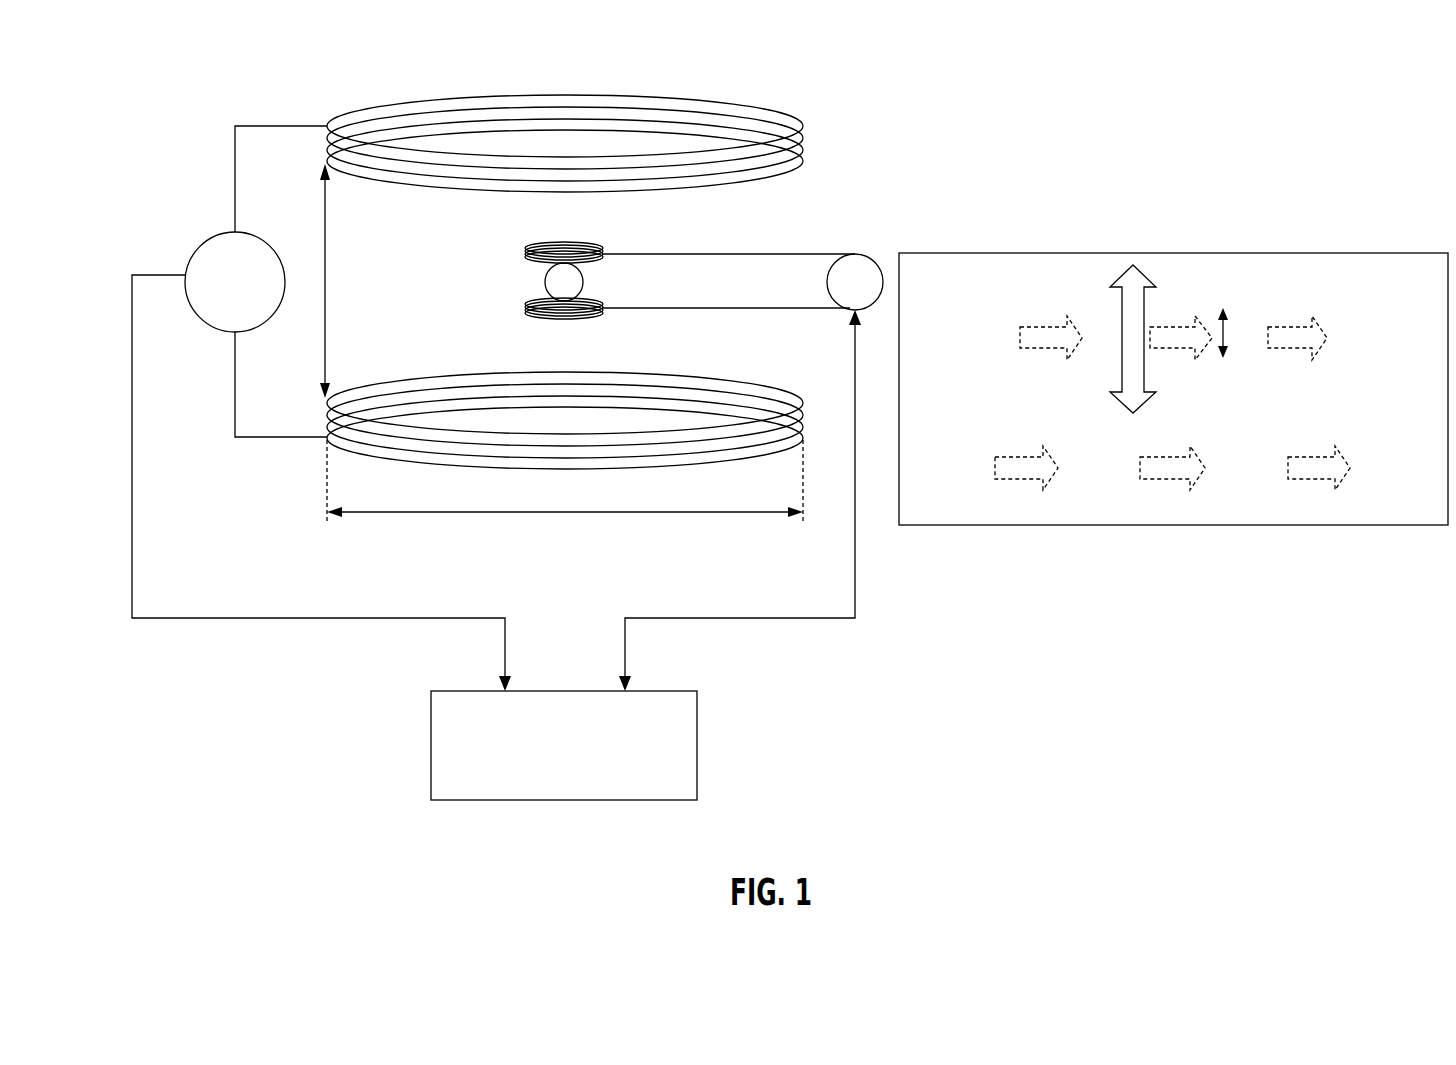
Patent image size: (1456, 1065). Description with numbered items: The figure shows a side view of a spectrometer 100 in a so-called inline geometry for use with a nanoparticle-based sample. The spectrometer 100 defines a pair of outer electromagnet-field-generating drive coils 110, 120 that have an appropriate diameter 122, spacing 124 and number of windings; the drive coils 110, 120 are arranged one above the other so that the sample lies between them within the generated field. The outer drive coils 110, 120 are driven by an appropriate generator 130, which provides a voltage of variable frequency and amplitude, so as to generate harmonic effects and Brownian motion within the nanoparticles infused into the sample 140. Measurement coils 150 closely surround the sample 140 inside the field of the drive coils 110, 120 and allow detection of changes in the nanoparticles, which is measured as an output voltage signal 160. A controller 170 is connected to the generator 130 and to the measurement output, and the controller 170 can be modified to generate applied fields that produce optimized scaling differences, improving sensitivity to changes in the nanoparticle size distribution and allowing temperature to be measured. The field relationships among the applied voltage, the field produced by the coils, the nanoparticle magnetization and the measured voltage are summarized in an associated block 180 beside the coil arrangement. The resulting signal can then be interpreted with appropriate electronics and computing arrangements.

The spectrometer 100 is at (845, 124).
The drive coil 110 is at (562, 88).
The drive coil 120 is at (564, 476).
The diameter 122 is at (451, 512).
The spacing 124 is at (327, 268).
The generator 130 is at (204, 246).
The sample 140 is at (584, 286).
The measurement coils 150 is at (525, 253).
The output voltage signal 160 is at (851, 255).
The controller 170 is at (697, 746).
The block 180 is at (1383, 252).